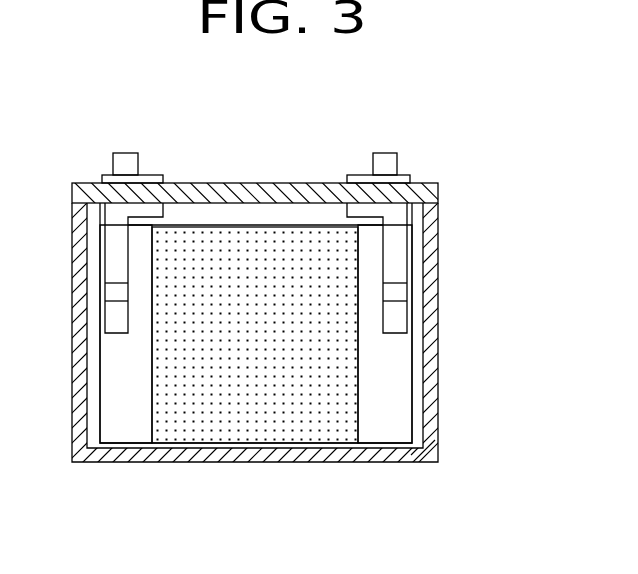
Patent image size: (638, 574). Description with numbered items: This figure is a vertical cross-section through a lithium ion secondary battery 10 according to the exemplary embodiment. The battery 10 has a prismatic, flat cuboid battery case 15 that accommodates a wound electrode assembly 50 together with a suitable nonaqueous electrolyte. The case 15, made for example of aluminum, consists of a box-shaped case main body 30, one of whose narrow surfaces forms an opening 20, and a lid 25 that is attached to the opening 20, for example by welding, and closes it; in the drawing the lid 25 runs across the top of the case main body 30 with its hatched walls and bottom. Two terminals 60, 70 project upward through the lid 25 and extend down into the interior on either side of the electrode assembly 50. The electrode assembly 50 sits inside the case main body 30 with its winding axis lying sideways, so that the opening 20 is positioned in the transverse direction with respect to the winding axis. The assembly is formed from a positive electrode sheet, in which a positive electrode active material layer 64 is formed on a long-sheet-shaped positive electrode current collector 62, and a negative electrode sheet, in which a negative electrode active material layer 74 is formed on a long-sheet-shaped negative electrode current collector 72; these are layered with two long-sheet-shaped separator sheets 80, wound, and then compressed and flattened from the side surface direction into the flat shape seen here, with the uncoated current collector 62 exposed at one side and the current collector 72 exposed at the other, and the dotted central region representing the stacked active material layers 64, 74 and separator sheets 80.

The lithium ion secondary battery 10 is at (549, 72).
The battery case 15 is at (527, 188).
The opening 20 is at (235, 219).
The lid 25 is at (438, 190).
The case main body 30 is at (438, 240).
The electrode assembly 50 is at (275, 224).
The positive electrode terminal 60 is at (124, 160).
The positive electrode current collector 62 is at (125, 432).
The positive electrode active material layer 64 is at (207, 412).
The negative electrode terminal 70 is at (386, 160).
The negative electrode current collector 72 is at (380, 432).
The negative electrode active material layer 74 is at (330, 410).
The separator sheets 80 is at (263, 430).